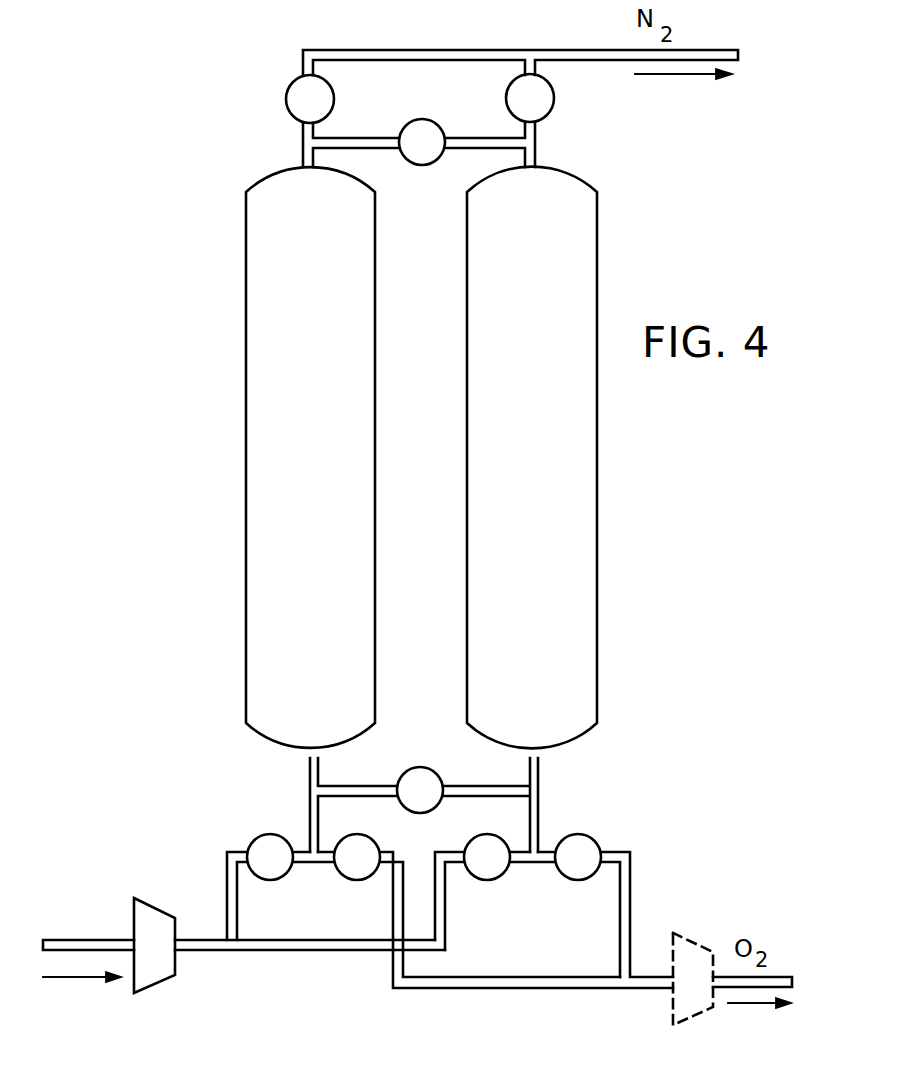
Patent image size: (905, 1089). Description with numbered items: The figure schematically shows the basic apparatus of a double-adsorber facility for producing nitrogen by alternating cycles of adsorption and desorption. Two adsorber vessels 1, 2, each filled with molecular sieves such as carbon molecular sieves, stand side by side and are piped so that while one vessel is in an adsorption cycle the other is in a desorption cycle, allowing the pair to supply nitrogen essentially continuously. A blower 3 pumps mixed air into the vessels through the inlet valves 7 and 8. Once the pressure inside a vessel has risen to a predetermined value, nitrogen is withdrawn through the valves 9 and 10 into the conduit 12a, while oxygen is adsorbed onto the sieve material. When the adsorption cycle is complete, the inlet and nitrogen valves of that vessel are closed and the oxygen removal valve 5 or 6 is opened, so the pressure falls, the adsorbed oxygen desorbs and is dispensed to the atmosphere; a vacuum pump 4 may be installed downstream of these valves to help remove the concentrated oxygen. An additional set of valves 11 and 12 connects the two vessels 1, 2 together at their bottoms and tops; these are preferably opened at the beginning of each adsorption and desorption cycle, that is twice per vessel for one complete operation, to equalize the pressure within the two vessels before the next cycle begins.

The adsorber vessel 1 is at (321, 472).
The adsorber vessel 2 is at (535, 471).
The blower 3 is at (166, 967).
The vacuum pump 4 is at (705, 997).
The valve 5 is at (344, 843).
The valve 6 is at (595, 855).
The valve 7 is at (252, 852).
The valve 8 is at (497, 841).
The valve 9 is at (293, 107).
The valve 10 is at (547, 113).
The valve 11 is at (434, 783).
The valve 12 is at (432, 157).
The conduit 12a is at (607, 47).